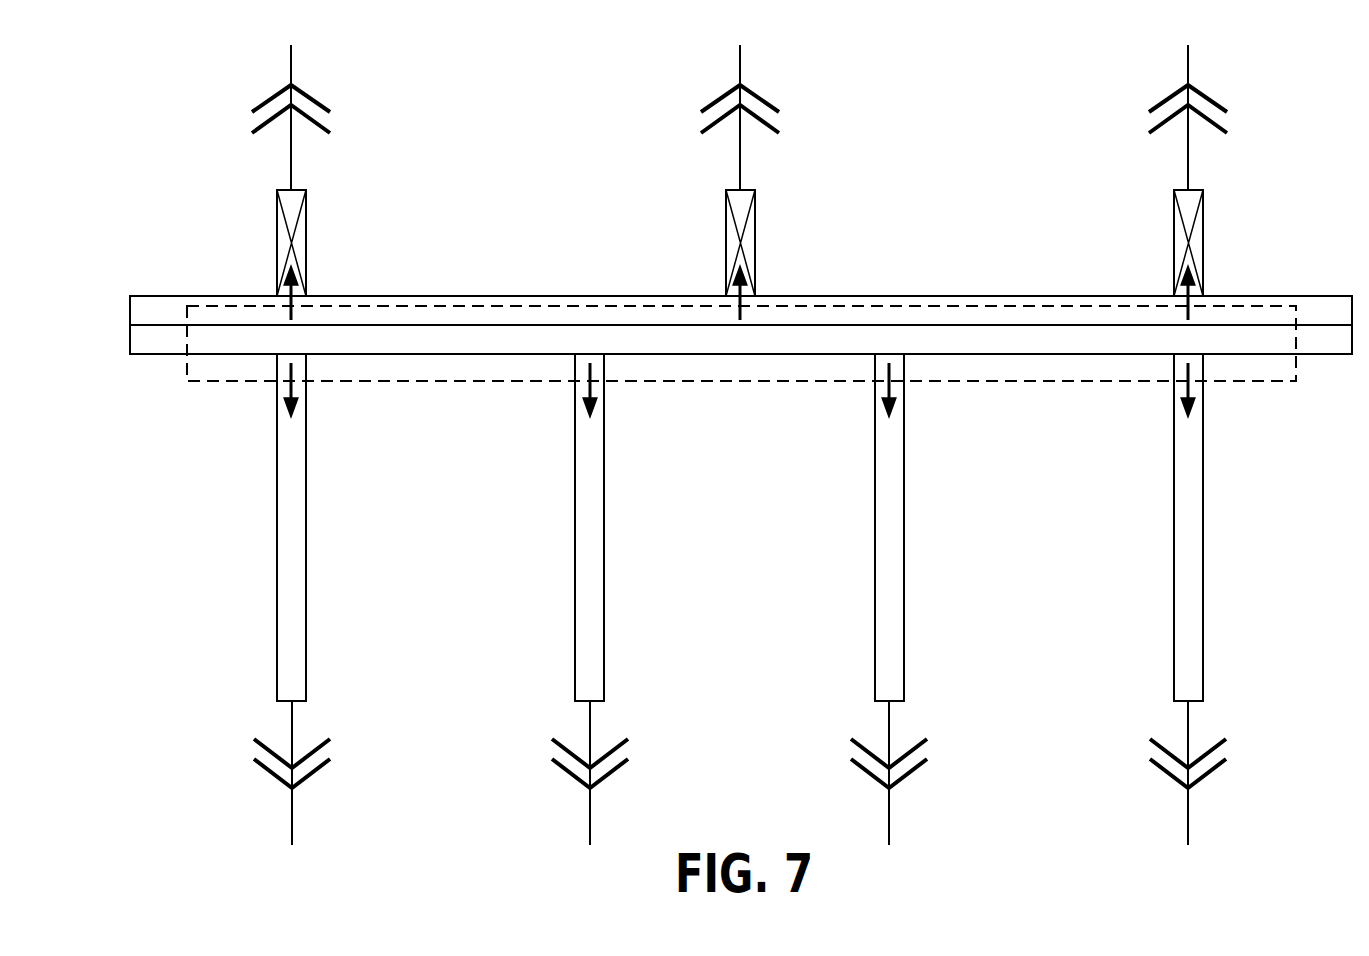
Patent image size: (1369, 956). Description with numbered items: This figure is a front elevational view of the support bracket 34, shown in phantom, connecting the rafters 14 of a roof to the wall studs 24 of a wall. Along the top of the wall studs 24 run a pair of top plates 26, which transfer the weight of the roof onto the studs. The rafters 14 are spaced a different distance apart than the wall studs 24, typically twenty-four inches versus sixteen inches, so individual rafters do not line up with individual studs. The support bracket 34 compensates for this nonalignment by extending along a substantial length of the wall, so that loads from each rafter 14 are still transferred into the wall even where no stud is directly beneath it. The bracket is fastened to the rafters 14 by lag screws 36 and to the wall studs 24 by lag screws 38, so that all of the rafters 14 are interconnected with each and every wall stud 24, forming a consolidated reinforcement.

The rafter 14 is at (306, 234).
The wall stud 24 is at (300, 564).
The top plate 26 is at (1330, 346).
The support bracket 34 is at (403, 385).
The lag screw 36 is at (298, 287).
The lag screw 38 is at (298, 398).